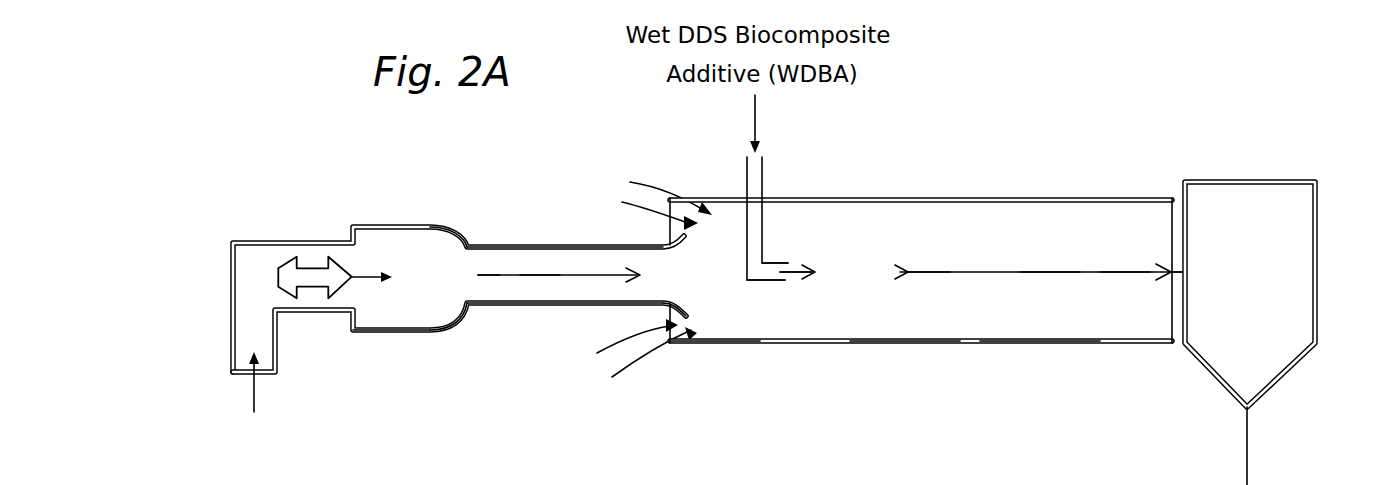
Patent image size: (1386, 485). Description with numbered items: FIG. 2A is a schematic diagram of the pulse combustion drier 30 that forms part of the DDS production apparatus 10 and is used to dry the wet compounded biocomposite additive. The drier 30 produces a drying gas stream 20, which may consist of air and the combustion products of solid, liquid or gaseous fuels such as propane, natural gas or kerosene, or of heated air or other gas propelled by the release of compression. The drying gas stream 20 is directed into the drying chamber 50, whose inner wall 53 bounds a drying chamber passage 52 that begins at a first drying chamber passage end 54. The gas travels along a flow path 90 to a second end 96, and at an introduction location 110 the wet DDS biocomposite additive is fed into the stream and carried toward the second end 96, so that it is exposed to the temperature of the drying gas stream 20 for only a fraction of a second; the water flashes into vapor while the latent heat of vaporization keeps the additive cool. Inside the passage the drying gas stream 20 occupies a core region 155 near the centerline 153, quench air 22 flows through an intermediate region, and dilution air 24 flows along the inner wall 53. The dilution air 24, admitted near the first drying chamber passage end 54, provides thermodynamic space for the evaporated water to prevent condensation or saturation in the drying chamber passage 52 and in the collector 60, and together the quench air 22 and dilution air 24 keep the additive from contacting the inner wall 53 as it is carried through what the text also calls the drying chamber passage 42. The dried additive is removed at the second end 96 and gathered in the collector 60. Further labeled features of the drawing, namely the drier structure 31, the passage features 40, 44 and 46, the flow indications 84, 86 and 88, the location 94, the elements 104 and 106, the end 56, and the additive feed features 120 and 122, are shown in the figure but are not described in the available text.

The DDS production apparatus 10 is at (1162, 124).
The drying gas stream 20 is at (527, 275).
The quench air 22 is at (410, 297).
The dilution air 24 is at (637, 183).
The pulse combustion drier 30 is at (200, 229).
The housing wall 31 is at (380, 332).
The nozzle lower wall 40 is at (527, 303).
The drying chamber passage 42 is at (550, 256).
The housing to nozzle transition 44 is at (470, 247).
The nozzle outlet flare 46 is at (685, 310).
The drying chamber 50 is at (963, 345).
The drying chamber passage 52 is at (907, 320).
The inner wall 53 is at (1017, 340).
The first drying chamber passage end 54 is at (670, 337).
The conduit outlet end 56 is at (1170, 343).
The collector 60 is at (1272, 200).
The feed arrow 84 is at (376, 276).
The air inlet arrow 86 is at (258, 395).
The feed screw / block arrow 88 is at (292, 273).
The flow path 90 is at (548, 278).
The flow inlet point 94 is at (478, 276).
The second end 96 is at (1125, 244).
The additive outlet region 104 is at (780, 287).
The conduit outlet 106 is at (1177, 280).
The introduction location 110 is at (777, 283).
The additive injector tube 120 is at (755, 182).
The additive injection point 122 is at (807, 268).
The centerline 153 is at (1042, 270).
The core region 155 is at (632, 473).